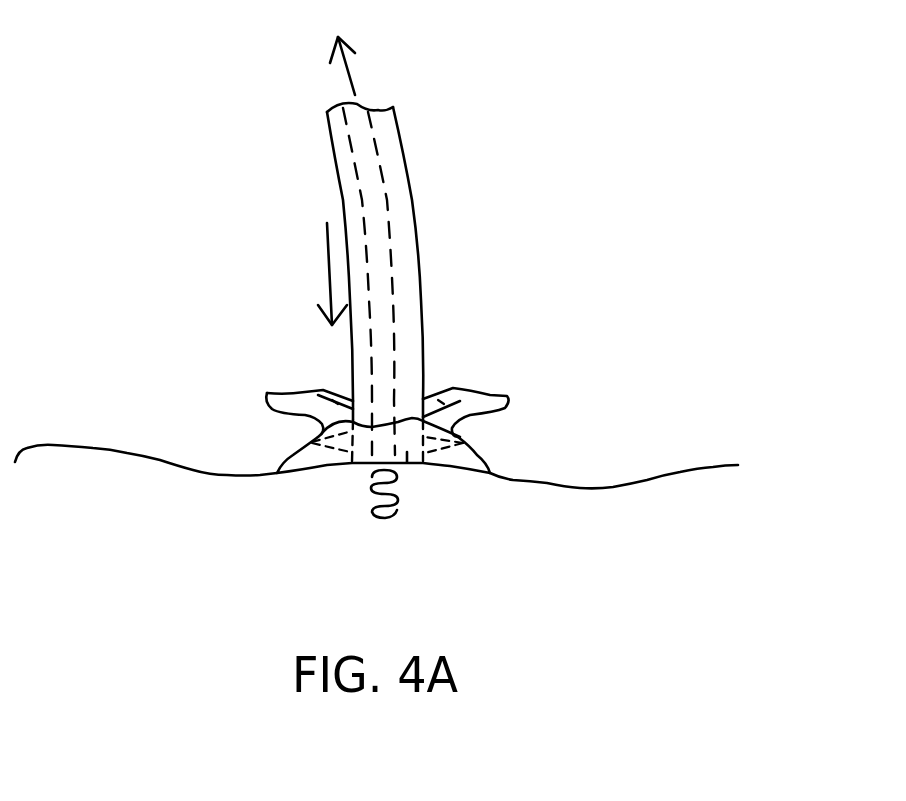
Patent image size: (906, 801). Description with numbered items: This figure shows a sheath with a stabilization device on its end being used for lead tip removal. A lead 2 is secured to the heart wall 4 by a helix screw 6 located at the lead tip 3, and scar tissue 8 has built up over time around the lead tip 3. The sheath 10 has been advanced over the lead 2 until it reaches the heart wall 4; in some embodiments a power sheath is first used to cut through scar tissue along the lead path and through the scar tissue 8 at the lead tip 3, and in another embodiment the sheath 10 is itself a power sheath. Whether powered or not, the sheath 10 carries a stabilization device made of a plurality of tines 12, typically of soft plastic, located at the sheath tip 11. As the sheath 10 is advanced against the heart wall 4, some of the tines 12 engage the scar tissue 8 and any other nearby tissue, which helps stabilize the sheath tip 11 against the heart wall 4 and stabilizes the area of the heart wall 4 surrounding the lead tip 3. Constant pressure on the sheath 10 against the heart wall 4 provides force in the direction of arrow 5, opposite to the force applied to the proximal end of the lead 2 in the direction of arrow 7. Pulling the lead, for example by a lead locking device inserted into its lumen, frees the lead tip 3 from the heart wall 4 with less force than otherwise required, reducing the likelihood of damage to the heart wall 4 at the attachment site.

The lead 2 is at (385, 218).
The lead tip 3 is at (373, 448).
The heart wall 4 is at (562, 488).
The arrow 5 is at (330, 272).
The helix screw 6 is at (397, 505).
The arrow 7 is at (345, 72).
The scar tissue 8 is at (483, 467).
The sheath 10 is at (422, 300).
The sheath tip 11 is at (407, 462).
The tines 12 is at (387, 399).